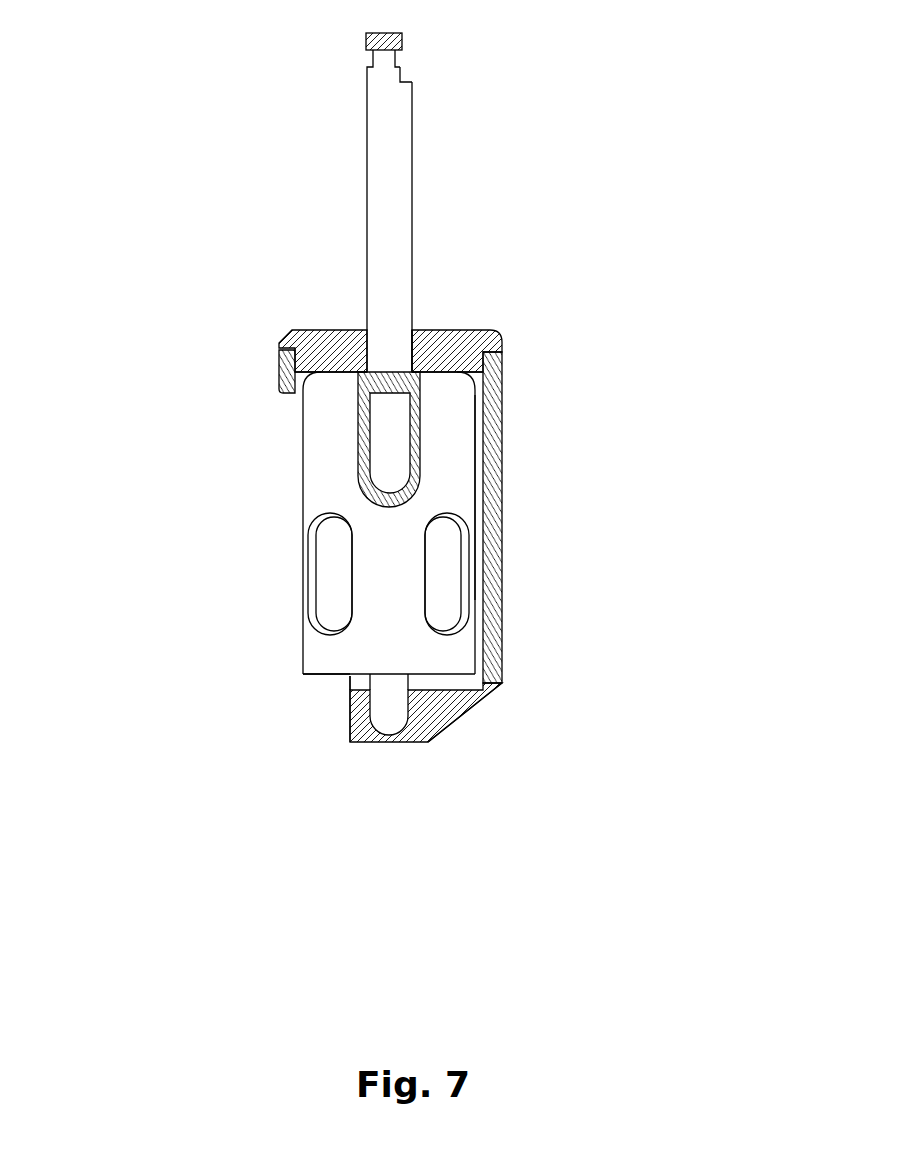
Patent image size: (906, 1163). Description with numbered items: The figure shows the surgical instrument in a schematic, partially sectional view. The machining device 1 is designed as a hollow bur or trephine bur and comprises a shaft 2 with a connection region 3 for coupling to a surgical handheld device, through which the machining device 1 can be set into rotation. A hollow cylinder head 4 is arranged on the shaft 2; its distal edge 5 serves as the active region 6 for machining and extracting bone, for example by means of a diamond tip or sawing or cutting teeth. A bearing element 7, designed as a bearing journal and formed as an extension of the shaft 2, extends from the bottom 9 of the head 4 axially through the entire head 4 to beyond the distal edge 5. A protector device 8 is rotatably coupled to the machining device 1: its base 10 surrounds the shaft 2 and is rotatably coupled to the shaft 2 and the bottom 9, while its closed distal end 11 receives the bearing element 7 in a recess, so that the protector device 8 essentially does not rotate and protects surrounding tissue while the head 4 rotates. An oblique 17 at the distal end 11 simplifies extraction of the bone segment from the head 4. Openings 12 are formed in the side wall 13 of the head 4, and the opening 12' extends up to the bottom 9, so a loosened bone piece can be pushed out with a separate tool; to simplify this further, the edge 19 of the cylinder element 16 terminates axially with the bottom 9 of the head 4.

The machining device 1 is at (395, 205).
The shaft 2 is at (388, 147).
The connection region 3 is at (395, 58).
The head 4 is at (315, 638).
The distal edge 5 is at (317, 677).
The active region 6 is at (342, 677).
The bearing element 7 is at (382, 490).
The protector device 8 is at (312, 330).
The bottom 9 is at (357, 372).
The base 10 is at (428, 330).
The distal end 11 is at (460, 722).
The opening 12 is at (515, 574).
The opening 12' is at (232, 497).
The side wall 13 is at (447, 492).
The cylinder element 16 is at (502, 425).
The oblique 17 is at (415, 347).
The edge 19 is at (278, 368).